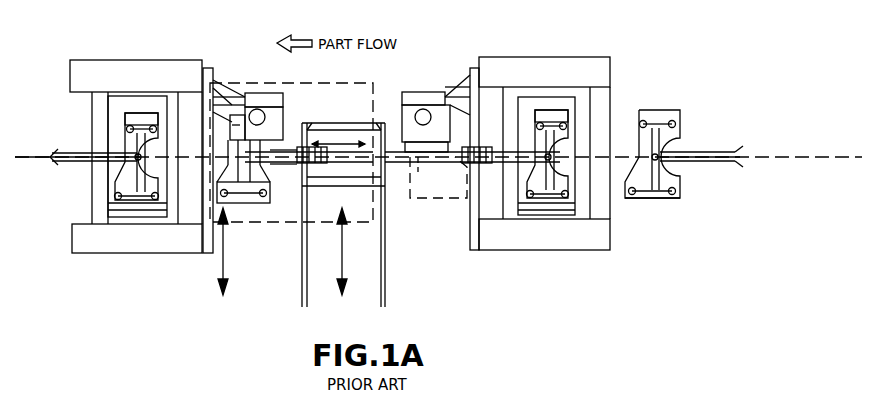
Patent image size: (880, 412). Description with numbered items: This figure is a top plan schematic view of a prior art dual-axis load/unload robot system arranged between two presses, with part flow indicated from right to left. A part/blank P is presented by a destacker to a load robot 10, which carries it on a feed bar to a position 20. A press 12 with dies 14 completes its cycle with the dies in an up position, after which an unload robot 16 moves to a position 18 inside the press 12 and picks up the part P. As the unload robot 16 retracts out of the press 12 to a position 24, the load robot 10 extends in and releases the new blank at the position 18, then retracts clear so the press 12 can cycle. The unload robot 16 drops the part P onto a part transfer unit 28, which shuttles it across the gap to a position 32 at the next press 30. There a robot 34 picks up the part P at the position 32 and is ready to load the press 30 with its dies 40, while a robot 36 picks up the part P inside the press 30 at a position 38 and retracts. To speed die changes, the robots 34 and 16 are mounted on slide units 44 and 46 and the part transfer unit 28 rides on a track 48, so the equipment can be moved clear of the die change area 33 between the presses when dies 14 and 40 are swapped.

The load robot 10 is at (697, 147).
The press 12 is at (545, 56).
The dies 14 is at (575, 100).
The unload robot 16 is at (420, 92).
The position 18 is at (545, 203).
The position 20 is at (653, 210).
The position 24 is at (437, 208).
The part transfer unit 28 is at (288, 135).
The next press 30 is at (133, 59).
The position 32 is at (248, 212).
The die change area 33 is at (290, 223).
The robot 34 is at (260, 95).
The robot 36 is at (65, 165).
The position 38 is at (120, 212).
The dies 40 is at (150, 95).
The slide unit 44 is at (210, 67).
The slide unit 46 is at (475, 82).
The track 48 is at (302, 285).
The part/blank P is at (657, 110).